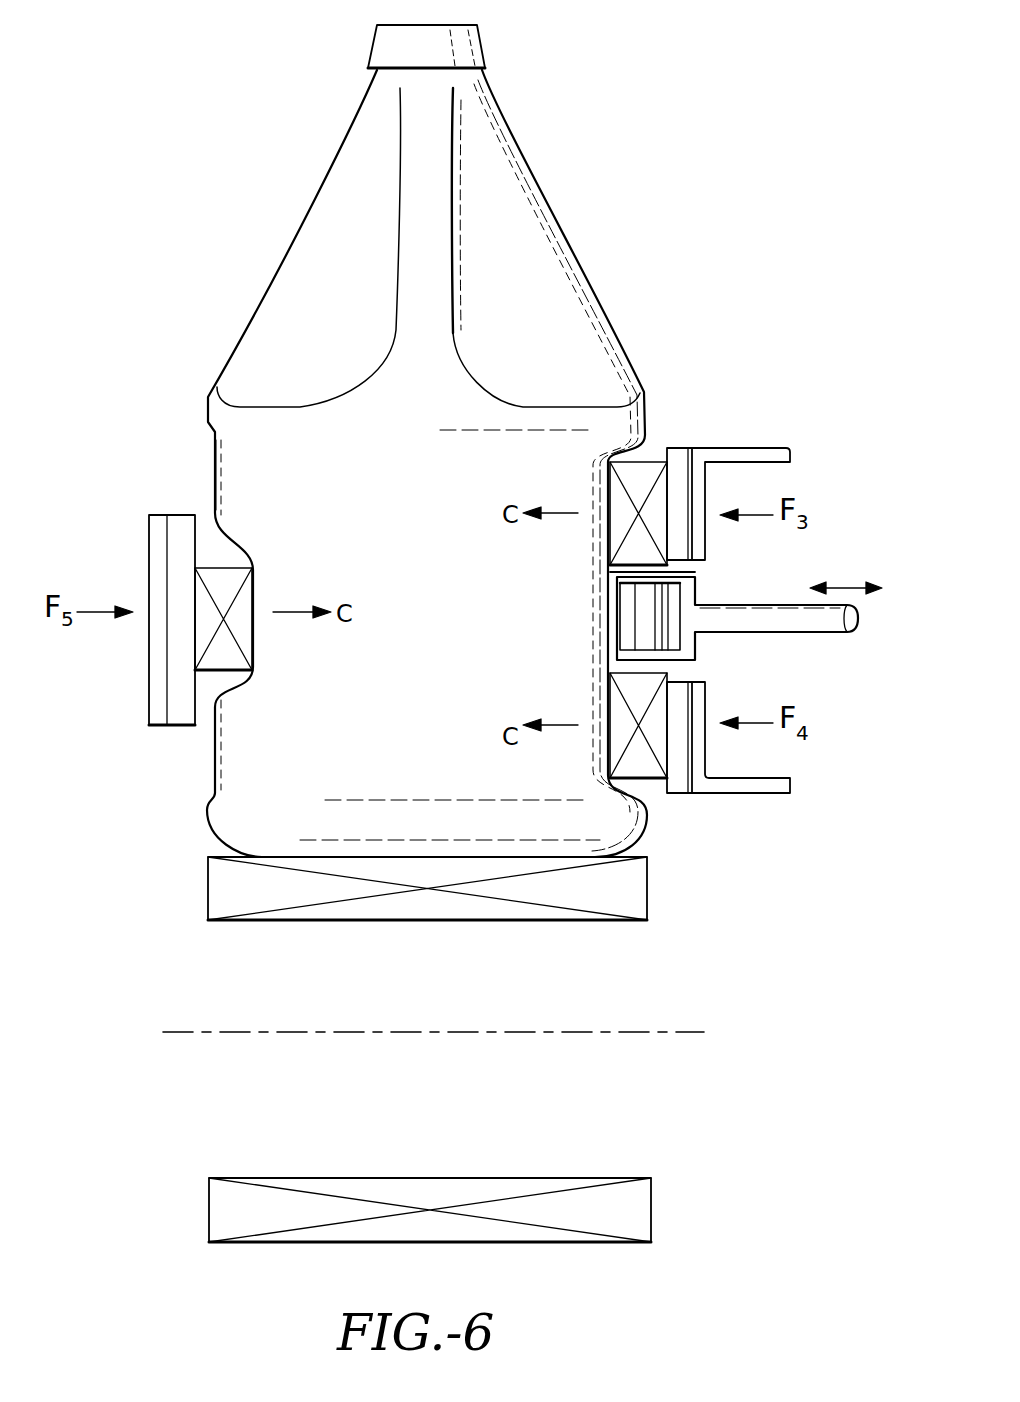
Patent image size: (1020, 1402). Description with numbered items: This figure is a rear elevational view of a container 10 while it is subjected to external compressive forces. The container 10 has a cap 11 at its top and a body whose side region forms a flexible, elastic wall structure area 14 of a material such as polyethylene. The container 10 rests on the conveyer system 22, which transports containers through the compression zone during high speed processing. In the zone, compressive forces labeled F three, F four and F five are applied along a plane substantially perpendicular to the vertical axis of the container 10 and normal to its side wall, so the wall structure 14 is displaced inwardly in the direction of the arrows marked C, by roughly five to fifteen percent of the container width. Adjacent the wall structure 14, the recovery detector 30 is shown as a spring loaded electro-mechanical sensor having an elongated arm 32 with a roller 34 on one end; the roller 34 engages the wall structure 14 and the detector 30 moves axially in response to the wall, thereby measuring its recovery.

The container 10 is at (563, 216).
The cap 11 is at (478, 30).
The wall structure area 14 is at (245, 465).
The conveyer system 22 is at (630, 893).
The recovery detector 30 is at (742, 604).
The elongated arm 32 is at (800, 637).
The roller 34 is at (660, 648).